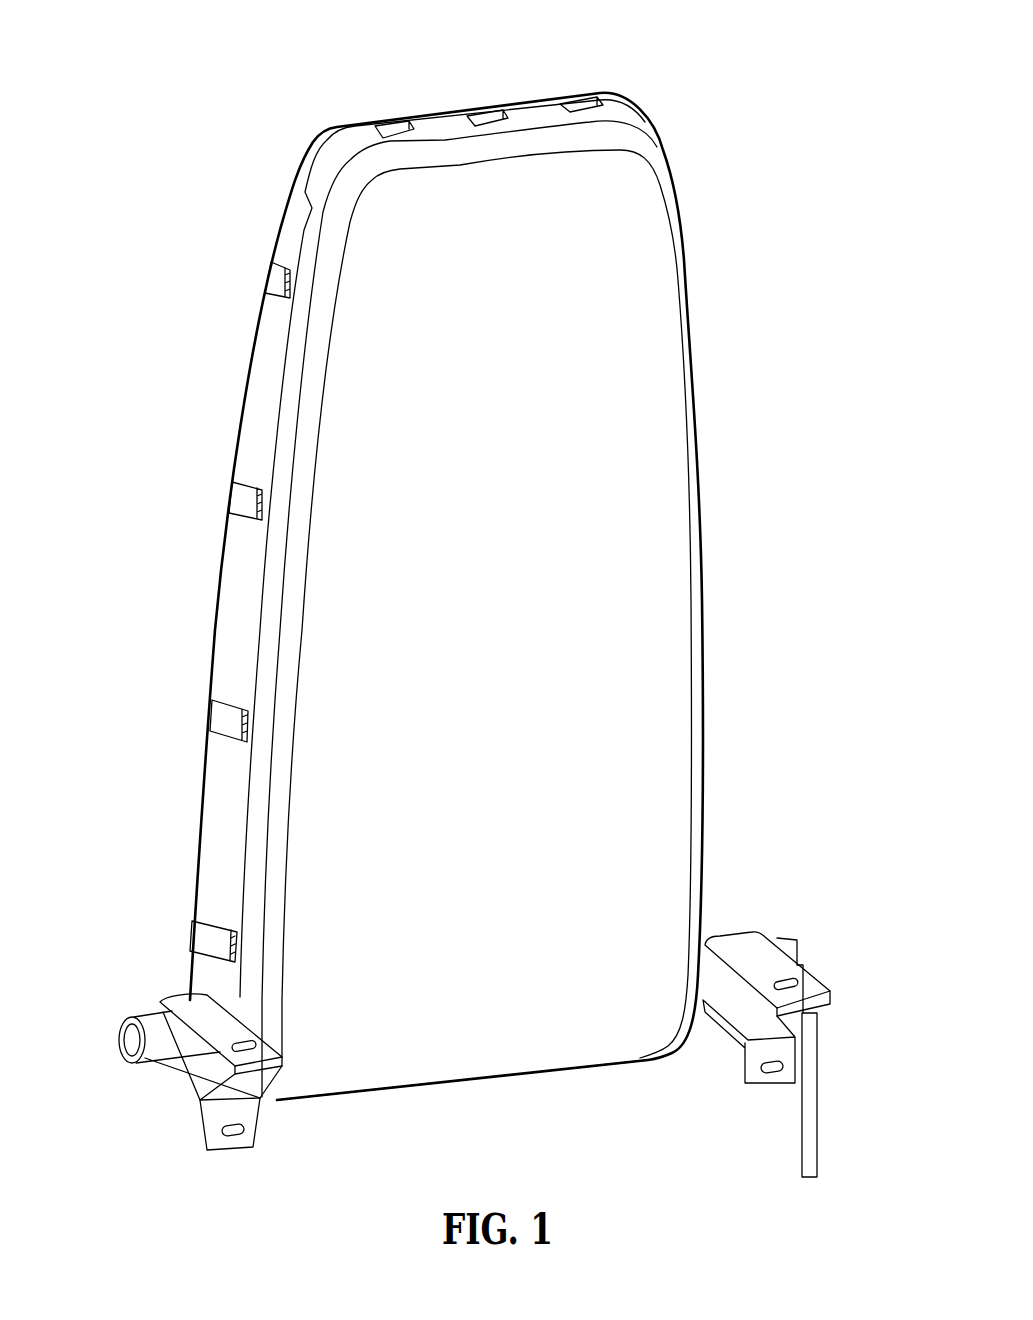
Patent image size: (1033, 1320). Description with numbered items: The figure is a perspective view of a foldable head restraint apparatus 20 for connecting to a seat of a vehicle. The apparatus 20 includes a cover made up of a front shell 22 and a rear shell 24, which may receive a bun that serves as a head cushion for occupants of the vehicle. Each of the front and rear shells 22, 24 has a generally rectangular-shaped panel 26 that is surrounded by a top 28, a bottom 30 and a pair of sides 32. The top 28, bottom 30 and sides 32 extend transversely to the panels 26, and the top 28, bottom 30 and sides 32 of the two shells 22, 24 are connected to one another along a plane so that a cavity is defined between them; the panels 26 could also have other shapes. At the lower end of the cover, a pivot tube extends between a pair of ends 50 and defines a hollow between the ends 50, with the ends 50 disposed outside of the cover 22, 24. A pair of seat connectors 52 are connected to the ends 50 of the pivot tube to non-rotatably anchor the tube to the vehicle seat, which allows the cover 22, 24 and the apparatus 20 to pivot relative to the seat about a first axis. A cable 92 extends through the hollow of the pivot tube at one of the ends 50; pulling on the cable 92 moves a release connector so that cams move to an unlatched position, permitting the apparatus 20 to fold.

The foldable head restraint apparatus 20 is at (442, 621).
The front shell 22 is at (703, 483).
The rear shell 24 is at (220, 585).
The panel 26 is at (658, 790).
The top 28 is at (440, 127).
The bottom 30 is at (325, 1082).
The sides 32 is at (220, 807).
The ends 50 is at (175, 1053).
The seat connectors 52 is at (757, 1082).
The cable 92 is at (807, 1150).